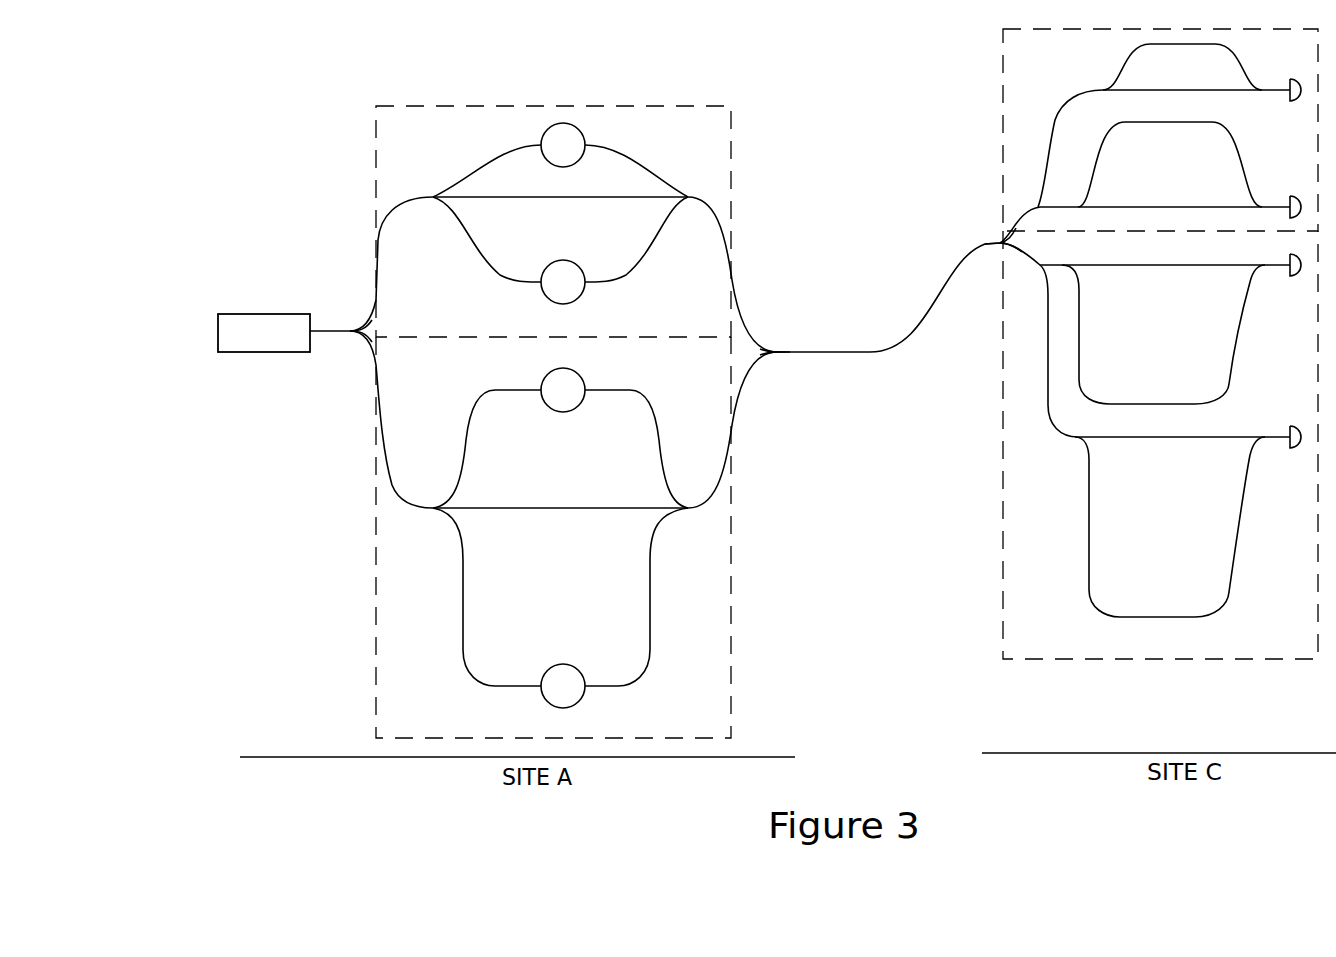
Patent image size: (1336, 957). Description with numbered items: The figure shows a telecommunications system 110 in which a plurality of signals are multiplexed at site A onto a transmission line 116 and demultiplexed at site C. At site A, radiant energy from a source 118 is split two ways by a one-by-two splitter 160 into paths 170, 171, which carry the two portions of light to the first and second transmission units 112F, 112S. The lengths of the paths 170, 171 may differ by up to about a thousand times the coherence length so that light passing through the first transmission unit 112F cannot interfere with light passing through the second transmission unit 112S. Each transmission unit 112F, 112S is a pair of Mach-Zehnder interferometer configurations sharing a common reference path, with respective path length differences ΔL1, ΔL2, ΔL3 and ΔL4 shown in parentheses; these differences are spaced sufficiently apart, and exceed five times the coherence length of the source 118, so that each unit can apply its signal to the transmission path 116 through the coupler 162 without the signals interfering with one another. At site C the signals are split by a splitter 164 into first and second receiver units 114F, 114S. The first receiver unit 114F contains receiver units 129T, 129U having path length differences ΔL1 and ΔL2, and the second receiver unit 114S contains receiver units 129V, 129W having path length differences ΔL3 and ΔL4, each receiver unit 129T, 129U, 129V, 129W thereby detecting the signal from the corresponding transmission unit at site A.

The telecommunications system 110 is at (486, 54).
The first transmission unit 112F is at (704, 104).
The second transmission unit 112S is at (731, 557).
The first receiver unit 114F is at (1002, 71).
The second receiver unit 114S is at (1000, 452).
The transmission line 116 is at (845, 353).
The source 118 is at (277, 312).
The 1×2 splitter 160 is at (360, 345).
The coupler 162 is at (777, 348).
The splitter 164 is at (990, 240).
The path 170 is at (385, 245).
The path 171 is at (388, 413).
The receiver unit 129T is at (1169, 124).
The receiver unit 129U is at (1189, 170).
The receiver unit 129V is at (1181, 329).
The receiver unit 129W is at (1188, 521).